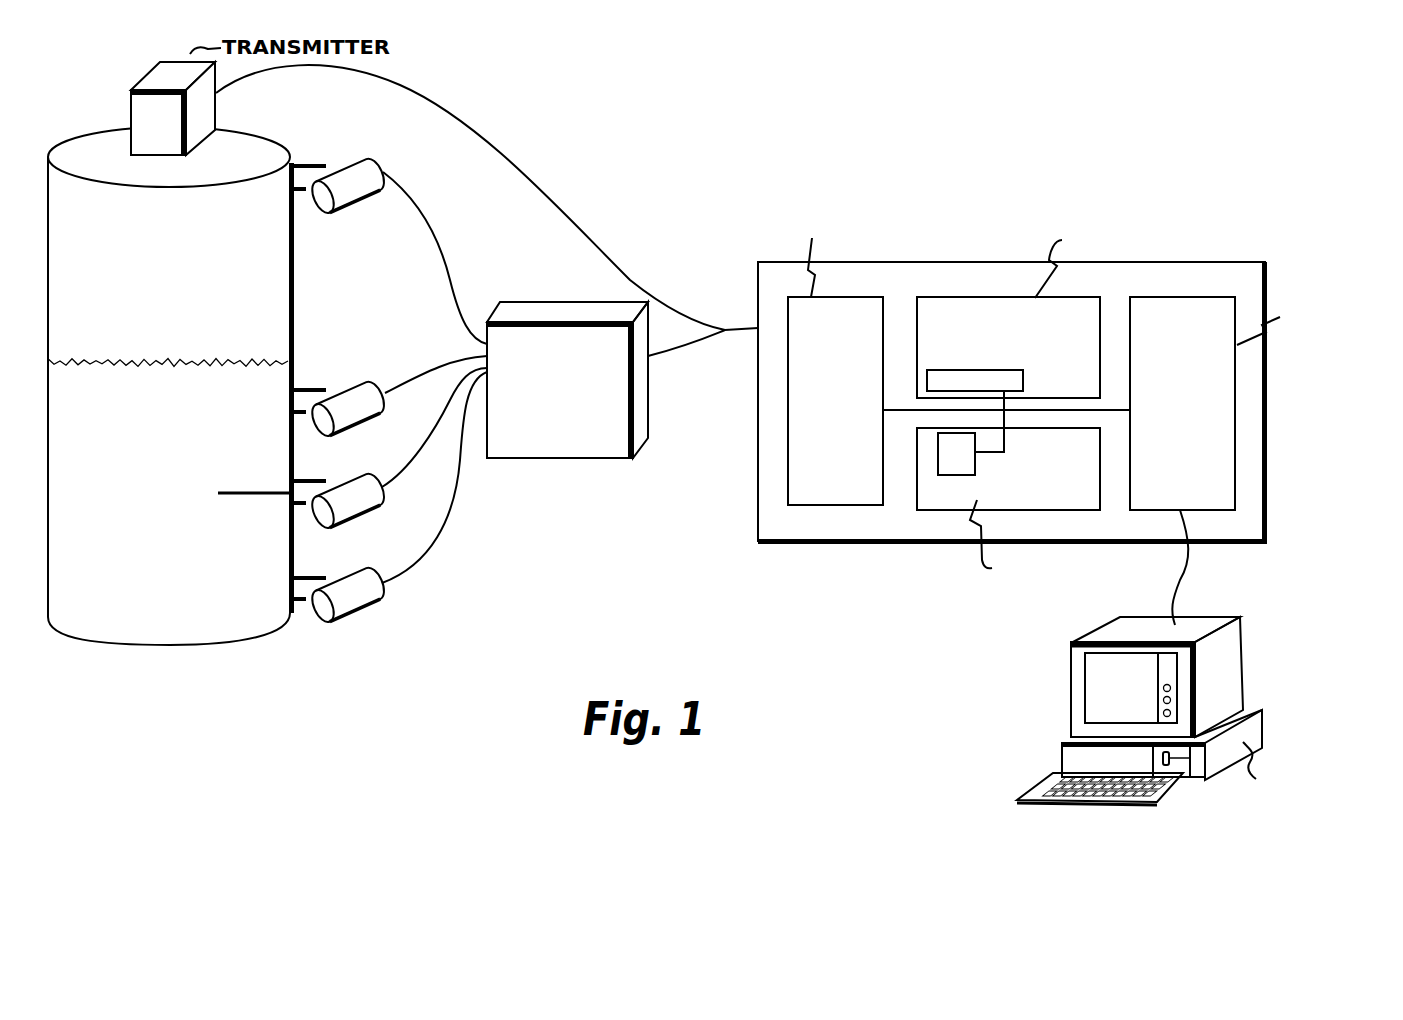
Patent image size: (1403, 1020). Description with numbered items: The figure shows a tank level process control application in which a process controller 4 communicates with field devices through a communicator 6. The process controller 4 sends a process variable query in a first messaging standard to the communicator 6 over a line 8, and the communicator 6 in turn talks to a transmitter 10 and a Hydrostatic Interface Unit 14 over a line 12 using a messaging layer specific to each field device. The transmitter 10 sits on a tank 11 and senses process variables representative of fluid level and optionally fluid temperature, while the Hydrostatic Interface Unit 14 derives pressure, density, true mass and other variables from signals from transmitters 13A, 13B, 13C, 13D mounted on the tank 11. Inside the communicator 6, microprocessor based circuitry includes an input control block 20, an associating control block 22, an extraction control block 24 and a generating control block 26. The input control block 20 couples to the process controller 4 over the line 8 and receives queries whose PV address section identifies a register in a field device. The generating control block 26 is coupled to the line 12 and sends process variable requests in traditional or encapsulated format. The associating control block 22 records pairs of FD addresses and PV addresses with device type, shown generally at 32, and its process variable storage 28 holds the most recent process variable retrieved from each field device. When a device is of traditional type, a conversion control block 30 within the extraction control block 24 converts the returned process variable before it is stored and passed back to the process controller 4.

The process controller 4 is at (1228, 685).
The communicator 6 is at (1121, 528).
The line 8 is at (1190, 597).
The field device (transmitter) 10 is at (137, 113).
The tank 11 is at (168, 561).
The line 12 is at (746, 331).
The transmitter 13A is at (367, 171).
The transmitter 13B is at (352, 392).
The transmitter 13C is at (364, 497).
The transmitter 13D is at (362, 595).
The Hydrostatic Interface Unit (HIU) 14 is at (568, 397).
The input control block 20 is at (1197, 437).
The associating control block 22 is at (1008, 300).
The extraction control block 24 is at (1044, 490).
The generating control block 26 is at (846, 443).
The process variable storage 28 is at (986, 393).
The conversion control block 30 is at (970, 465).
The FD address, PV address and device type entry 32 is at (1018, 298).